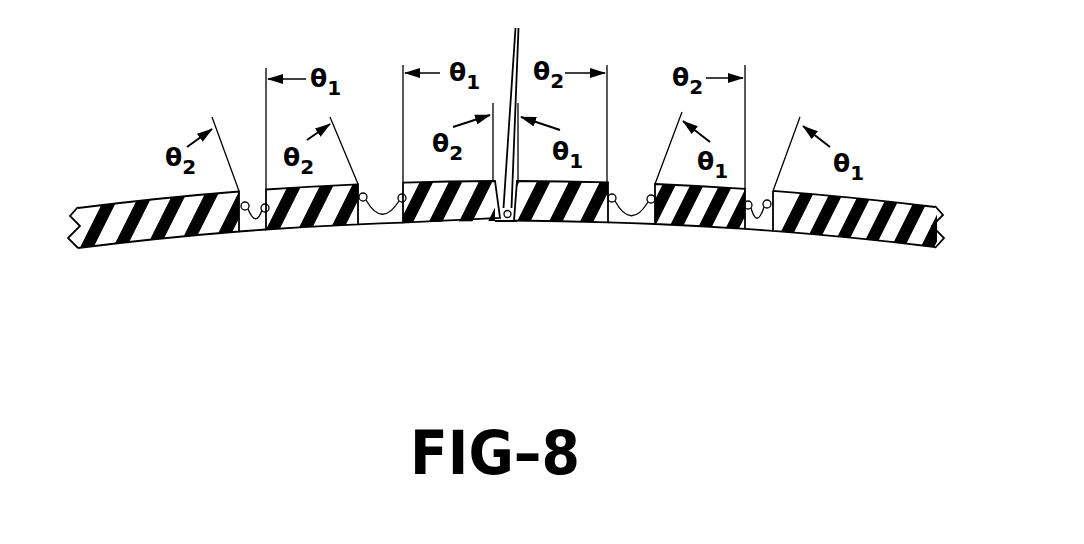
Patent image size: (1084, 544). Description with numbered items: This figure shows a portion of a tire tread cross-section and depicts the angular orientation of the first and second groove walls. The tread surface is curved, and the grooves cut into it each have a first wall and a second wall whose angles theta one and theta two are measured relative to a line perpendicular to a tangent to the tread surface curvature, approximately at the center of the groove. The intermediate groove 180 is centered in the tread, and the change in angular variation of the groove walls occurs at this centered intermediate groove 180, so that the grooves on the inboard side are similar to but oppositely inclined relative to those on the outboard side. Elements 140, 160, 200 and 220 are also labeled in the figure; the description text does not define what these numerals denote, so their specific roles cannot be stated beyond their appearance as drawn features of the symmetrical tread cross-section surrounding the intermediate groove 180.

The outer layer / band segment 140 is at (921, 208).
The band segment 160 is at (120, 203).
The intermediate groove 180 is at (517, 109).
The notch / recess 200 is at (262, 231).
The loop / fold at notch edge 220 is at (244, 230).